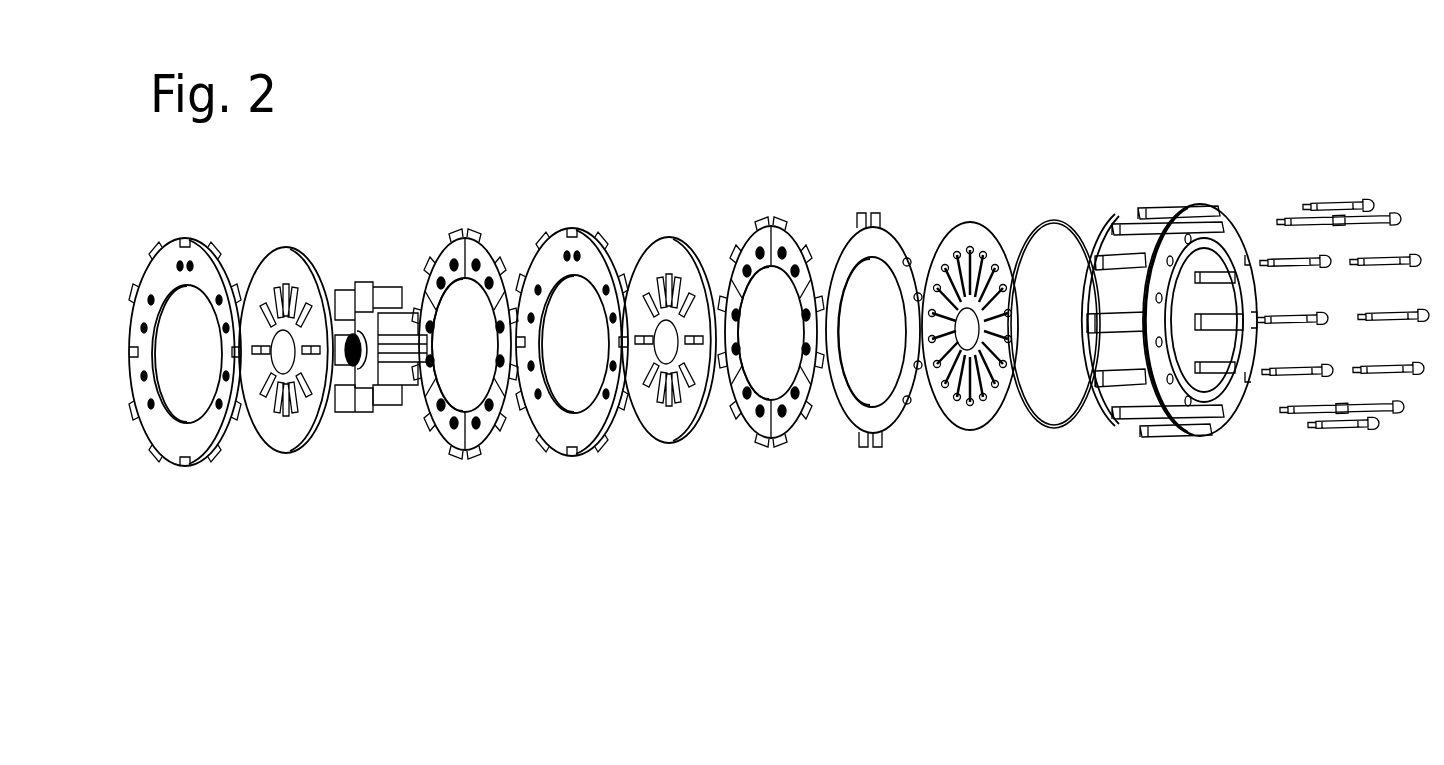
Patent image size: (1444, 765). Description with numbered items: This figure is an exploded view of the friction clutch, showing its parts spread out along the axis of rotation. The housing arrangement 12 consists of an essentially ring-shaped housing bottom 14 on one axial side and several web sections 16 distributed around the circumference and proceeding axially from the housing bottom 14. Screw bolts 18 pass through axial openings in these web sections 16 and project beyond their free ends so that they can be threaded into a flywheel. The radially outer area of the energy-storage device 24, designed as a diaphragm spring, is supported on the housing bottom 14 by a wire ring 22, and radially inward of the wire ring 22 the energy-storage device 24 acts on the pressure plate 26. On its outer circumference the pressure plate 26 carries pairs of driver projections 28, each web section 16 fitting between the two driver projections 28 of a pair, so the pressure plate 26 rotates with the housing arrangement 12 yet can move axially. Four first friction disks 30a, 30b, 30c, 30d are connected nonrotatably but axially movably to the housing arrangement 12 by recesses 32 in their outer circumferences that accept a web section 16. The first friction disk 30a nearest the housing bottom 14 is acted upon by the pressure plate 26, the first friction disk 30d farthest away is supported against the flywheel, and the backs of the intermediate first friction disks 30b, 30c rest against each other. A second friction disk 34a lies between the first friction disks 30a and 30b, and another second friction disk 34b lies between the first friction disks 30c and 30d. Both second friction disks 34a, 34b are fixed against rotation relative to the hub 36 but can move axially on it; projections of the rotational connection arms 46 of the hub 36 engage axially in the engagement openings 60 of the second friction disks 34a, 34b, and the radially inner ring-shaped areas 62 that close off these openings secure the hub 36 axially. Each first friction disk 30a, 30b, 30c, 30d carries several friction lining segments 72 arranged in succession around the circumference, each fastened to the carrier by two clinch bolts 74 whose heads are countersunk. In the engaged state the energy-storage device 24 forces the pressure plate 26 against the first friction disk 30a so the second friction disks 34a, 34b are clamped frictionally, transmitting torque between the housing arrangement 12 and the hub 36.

The housing arrangement 12 is at (1213, 223).
The housing bottom 14 is at (1263, 357).
The web sections 16 is at (1160, 437).
The screw bolts 18 is at (1365, 202).
The wire ring 22 is at (1057, 222).
The energy-storage device 24 is at (962, 417).
The pressure plate 26 is at (883, 250).
The driver projections 28 is at (877, 213).
The first friction disk 30a is at (765, 247).
The first friction disk 30b is at (583, 270).
The first friction disk 30c is at (462, 267).
The first friction disk 30d is at (165, 288).
The recesses 32 is at (185, 242).
The second friction disk 34a is at (673, 257).
The second friction disk 34b is at (303, 278).
The hub 36 is at (385, 307).
The rotational connection arms 46 is at (367, 407).
The engagement openings 60 is at (280, 413).
The ring-shaped area 62 is at (273, 323).
The friction lining segments 72 is at (442, 438).
The clinch bolts 74 is at (442, 425).